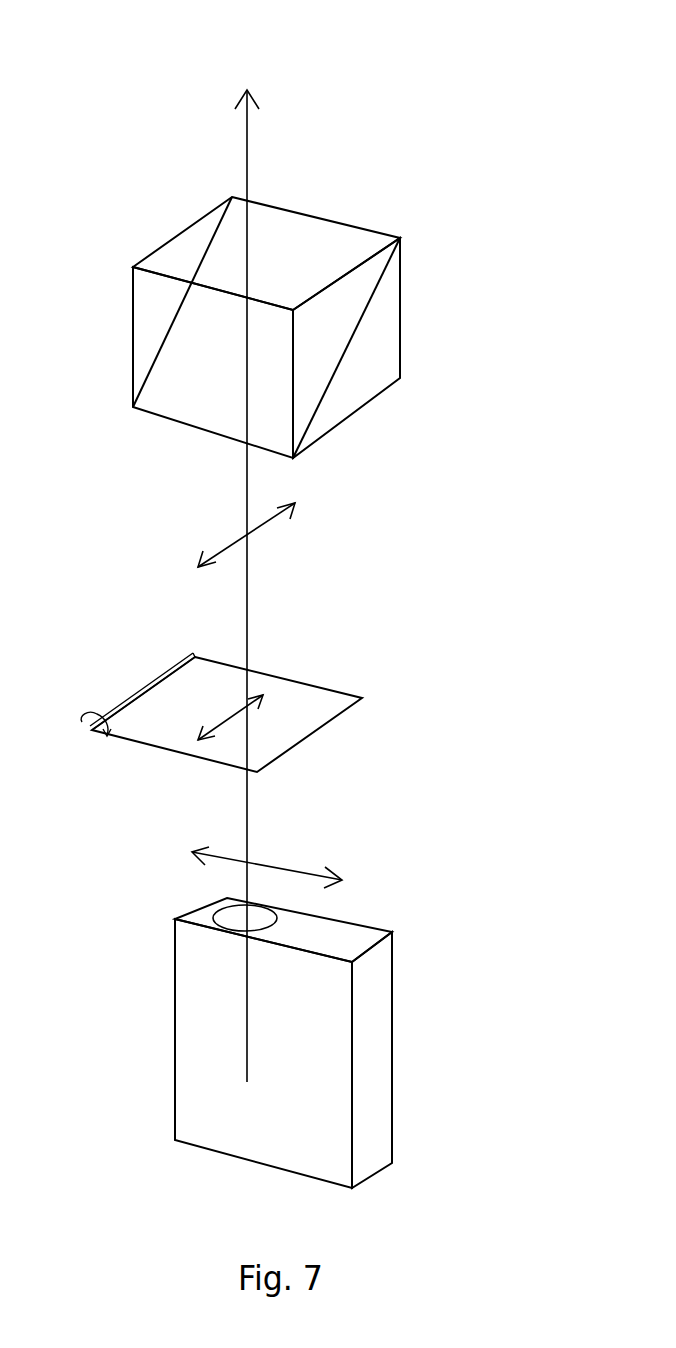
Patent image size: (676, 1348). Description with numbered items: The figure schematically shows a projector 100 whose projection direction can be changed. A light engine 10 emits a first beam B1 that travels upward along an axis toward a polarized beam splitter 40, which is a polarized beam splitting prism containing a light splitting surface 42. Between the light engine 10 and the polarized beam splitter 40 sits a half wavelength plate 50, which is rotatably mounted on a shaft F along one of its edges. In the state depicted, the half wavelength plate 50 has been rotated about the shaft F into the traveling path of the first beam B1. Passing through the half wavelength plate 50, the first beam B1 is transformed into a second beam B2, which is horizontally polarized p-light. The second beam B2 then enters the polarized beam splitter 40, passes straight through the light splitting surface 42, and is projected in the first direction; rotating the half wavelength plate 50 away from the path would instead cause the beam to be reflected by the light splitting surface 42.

The projector 100 is at (336, 33).
The polarized beam splitter 40 is at (353, 363).
The light splitting surface 42 is at (347, 292).
The half wavelength plate 50 is at (278, 678).
The shaft F is at (172, 670).
The light engine 10 is at (373, 1083).
The first beam B1 is at (245, 893).
The second beam B2 is at (245, 490).